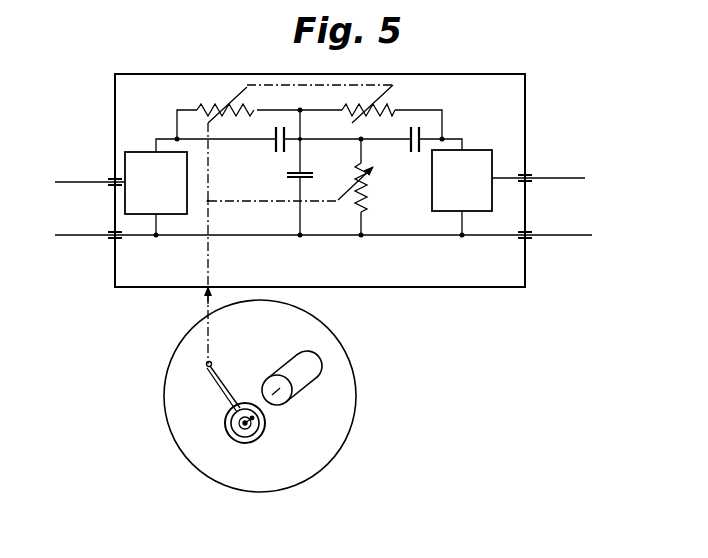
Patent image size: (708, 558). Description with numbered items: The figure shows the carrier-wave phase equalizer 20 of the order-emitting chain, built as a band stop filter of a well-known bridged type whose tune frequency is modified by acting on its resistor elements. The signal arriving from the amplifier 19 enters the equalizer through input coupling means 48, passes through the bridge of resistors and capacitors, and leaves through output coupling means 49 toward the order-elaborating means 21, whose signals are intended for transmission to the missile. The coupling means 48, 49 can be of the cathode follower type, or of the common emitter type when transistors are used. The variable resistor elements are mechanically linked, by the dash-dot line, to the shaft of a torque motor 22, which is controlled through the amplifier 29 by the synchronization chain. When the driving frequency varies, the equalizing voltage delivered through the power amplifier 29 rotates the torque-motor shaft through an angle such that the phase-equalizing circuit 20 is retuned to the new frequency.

The carrier-wave phase equalizer 20 is at (137, 72).
The coupling means 48 is at (126, 161).
The coupling means 49 is at (482, 162).
The amplifier 19 is at (110, 210).
The order-elaborating means 21 is at (525, 207).
The torque motor 22 is at (356, 402).
The amplifier 29 is at (306, 396).